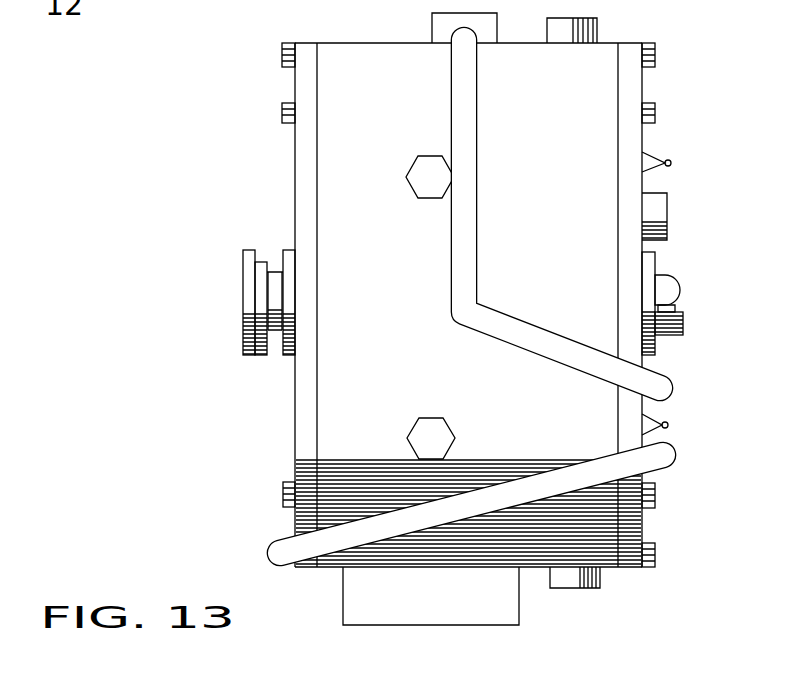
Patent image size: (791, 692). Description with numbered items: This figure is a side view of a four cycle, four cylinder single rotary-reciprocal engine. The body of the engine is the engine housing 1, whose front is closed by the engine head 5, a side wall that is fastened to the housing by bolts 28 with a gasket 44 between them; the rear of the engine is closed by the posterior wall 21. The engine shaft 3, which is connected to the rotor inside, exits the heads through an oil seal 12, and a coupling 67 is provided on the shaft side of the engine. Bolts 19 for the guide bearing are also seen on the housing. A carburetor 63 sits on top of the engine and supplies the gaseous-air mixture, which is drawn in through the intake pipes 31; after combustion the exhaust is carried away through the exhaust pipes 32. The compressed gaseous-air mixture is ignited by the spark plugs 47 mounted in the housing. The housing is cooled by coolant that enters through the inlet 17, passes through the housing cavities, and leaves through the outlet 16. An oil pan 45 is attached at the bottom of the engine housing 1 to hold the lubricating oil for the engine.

The engine housing 1 is at (367, 383).
The engine shaft 3 is at (663, 285).
The engine head 5 is at (625, 80).
The oil seal 12 is at (653, 260).
The outlet 16 is at (568, 32).
The inlet 17 is at (600, 585).
The bolt for guide bearing 19 is at (437, 175).
The posterior wall 21 is at (307, 97).
The bolt 28 is at (285, 50).
The intake pipe 31 is at (460, 127).
The exhaust pipe 32 is at (290, 562).
The gasket 44 is at (313, 150).
The oil pan 45 is at (497, 583).
The spark plug 47 is at (665, 162).
The carburetor 63 is at (442, 32).
The coupling 67 is at (249, 270).